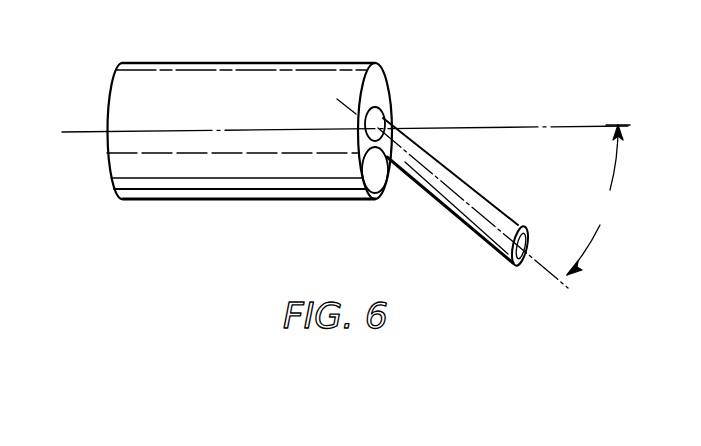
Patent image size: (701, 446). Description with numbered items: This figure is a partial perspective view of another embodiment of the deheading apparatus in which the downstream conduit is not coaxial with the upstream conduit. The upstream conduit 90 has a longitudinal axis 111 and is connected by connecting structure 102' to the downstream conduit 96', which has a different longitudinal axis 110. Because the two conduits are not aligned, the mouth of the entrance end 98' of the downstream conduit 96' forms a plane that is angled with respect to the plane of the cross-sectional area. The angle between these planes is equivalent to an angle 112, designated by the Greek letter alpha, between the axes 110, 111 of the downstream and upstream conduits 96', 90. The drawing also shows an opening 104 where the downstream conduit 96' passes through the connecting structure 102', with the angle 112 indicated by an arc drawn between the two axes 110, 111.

The upstream conduit 90 is at (280, 63).
The connecting structure 102' is at (402, 114).
The longitudinal axis of upstream conduit 111 is at (390, 113).
The entrance end 98' is at (249, 218).
The aperture 104 is at (381, 150).
The downstream conduit 96' is at (473, 203).
The longitudinal axis of downstream conduit 110 is at (494, 227).
The angle 112 is at (615, 168).